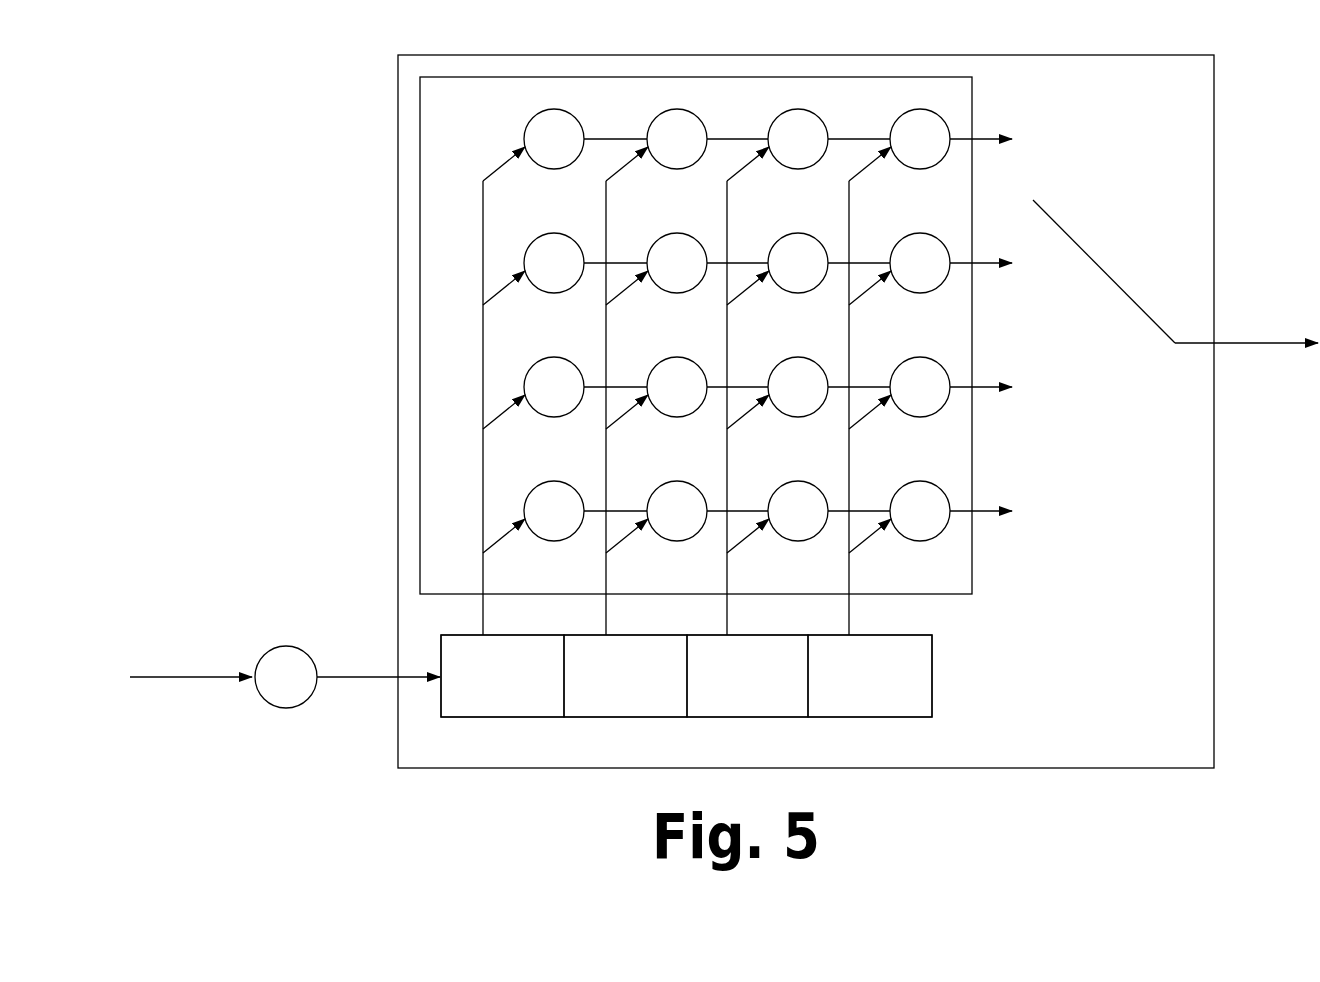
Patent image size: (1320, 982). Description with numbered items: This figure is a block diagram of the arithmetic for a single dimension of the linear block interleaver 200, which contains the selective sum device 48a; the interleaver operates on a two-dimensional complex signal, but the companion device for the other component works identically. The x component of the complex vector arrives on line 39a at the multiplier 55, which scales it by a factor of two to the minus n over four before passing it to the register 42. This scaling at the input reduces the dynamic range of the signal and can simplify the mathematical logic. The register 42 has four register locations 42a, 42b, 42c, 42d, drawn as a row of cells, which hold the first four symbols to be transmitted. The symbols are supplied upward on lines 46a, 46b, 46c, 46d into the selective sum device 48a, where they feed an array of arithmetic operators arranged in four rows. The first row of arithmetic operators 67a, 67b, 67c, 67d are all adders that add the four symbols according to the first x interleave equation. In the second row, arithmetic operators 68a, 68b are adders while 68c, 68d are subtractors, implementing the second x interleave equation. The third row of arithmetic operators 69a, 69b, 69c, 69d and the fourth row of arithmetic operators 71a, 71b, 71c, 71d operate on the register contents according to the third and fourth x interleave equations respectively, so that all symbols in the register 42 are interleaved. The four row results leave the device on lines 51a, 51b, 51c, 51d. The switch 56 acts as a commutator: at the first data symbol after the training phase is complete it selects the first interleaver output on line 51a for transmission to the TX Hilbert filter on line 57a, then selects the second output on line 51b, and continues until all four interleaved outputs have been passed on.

The linear block interleaver 200 is at (1187, 106).
The selective sum device 48a is at (475, 160).
The arithmetic operator 67a is at (920, 109).
The arithmetic operator 67b is at (798, 109).
The arithmetic operator 67c is at (677, 109).
The arithmetic operator 67d is at (554, 109).
The arithmetic operator 68a is at (920, 233).
The arithmetic operator 68b is at (798, 233).
The arithmetic operator 68c is at (677, 233).
The arithmetic operator 68d is at (554, 233).
The arithmetic operator 69a is at (920, 357).
The arithmetic operator 69b is at (798, 357).
The arithmetic operator 69c is at (677, 357).
The arithmetic operator 69d is at (554, 357).
The arithmetic operator 71a is at (920, 481).
The arithmetic operator 71b is at (798, 481).
The arithmetic operator 71c is at (677, 481).
The arithmetic operator 71d is at (554, 481).
The line 46a is at (849, 578).
The line 46b is at (727, 580).
The line 46c is at (606, 581).
The line 46d is at (483, 583).
The line 51a is at (1011, 128).
The line 51b is at (1011, 252).
The line 51c is at (1010, 376).
The line 51d is at (1011, 500).
The switch 56 is at (1107, 273).
The line 57a is at (1248, 343).
The line 39a is at (193, 677).
The multiplier 55 is at (285, 708).
The register 42 is at (962, 672).
The register location 42a is at (823, 717).
The register location 42b is at (705, 717).
The register location 42c is at (587, 717).
The register location 42d is at (467, 717).